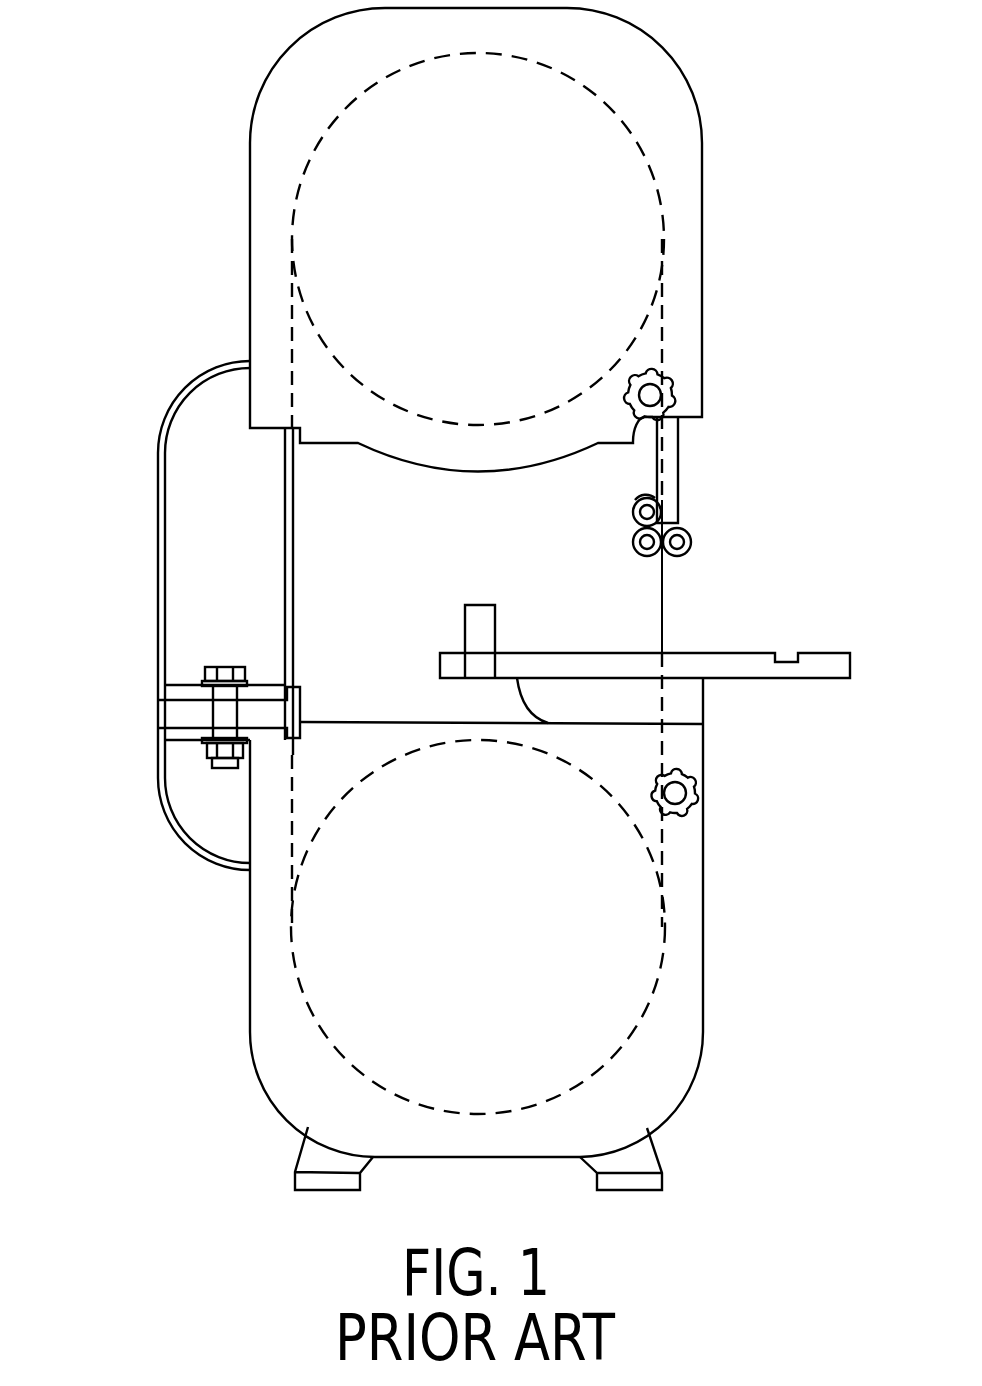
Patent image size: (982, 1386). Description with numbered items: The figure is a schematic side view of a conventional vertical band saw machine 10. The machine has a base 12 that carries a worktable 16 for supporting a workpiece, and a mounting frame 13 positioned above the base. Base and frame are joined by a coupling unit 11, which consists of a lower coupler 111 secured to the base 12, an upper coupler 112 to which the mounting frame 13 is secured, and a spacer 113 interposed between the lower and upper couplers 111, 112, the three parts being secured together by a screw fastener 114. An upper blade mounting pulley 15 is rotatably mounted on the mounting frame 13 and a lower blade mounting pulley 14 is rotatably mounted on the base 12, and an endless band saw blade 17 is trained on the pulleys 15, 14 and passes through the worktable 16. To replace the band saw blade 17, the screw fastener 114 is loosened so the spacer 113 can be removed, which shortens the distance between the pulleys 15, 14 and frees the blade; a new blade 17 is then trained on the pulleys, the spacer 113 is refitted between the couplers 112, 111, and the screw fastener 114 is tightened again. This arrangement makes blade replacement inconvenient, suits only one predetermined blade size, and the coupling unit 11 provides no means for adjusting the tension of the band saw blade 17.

The vertical band saw machine 10 is at (703, 165).
The coupling unit 11 is at (157, 588).
The lower coupler 111 is at (193, 812).
The upper coupler 112 is at (195, 465).
The spacer 113 is at (170, 712).
The screw fastener 114 is at (207, 748).
The base 12 is at (250, 1005).
The mounting frame 13 is at (248, 167).
The lower blade mounting pulley 14 is at (618, 962).
The upper blade mounting pulley 15 is at (313, 227).
The worktable 16 is at (823, 650).
The endless band saw blade 17 is at (663, 603).